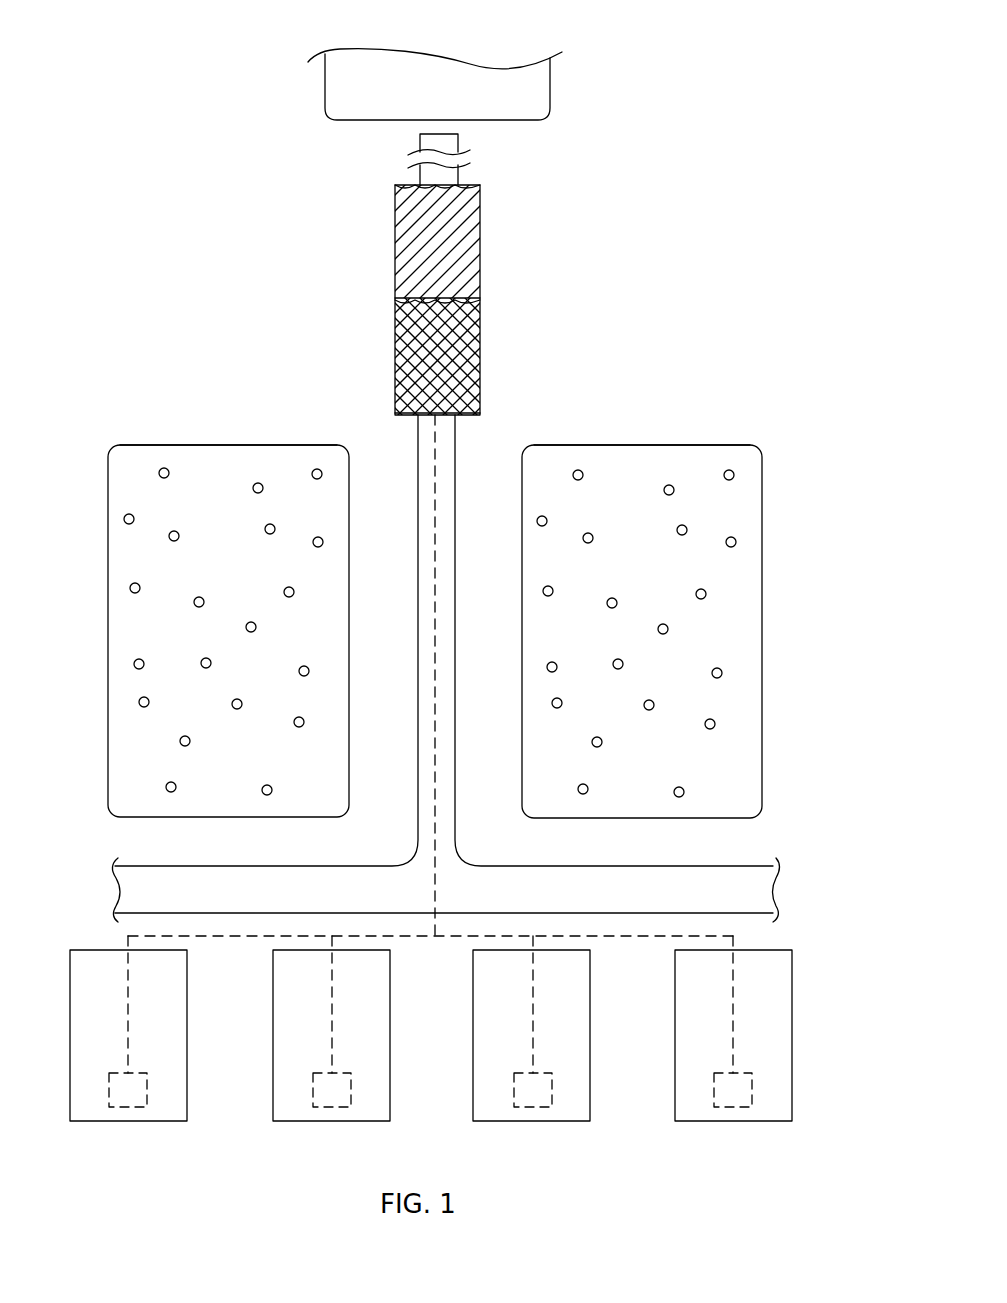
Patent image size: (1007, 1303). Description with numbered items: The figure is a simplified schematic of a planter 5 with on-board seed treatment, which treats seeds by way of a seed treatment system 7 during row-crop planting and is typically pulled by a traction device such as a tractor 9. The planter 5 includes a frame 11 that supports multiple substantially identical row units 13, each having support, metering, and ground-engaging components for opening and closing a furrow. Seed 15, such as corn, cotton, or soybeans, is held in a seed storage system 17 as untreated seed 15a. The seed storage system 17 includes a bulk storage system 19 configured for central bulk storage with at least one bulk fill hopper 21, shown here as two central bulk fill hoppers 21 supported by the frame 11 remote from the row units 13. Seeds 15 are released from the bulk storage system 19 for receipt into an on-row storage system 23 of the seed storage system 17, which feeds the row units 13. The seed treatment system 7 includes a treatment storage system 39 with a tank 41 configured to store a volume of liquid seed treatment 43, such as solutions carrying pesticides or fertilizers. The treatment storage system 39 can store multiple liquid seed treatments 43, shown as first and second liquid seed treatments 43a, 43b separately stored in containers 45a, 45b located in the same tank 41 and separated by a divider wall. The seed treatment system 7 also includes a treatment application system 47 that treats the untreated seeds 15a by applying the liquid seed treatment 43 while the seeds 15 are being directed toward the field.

The planter 5 is at (683, 190).
The seed treatment system 7 is at (550, 218).
The tractor 9 is at (622, 88).
The frame 11 is at (457, 512).
The row units 13 is at (312, 1140).
The seed 15 is at (439, 603).
The untreated seed 15a is at (126, 516).
The seed storage system 17 is at (439, 563).
The bulk storage system 19 is at (127, 410).
The bulk fill hopper 21 is at (310, 440).
The on-row storage system 23 is at (481, 983).
The treatment storage system 39 is at (430, 276).
The tank 41 is at (395, 298).
The liquid seed treatment 43 is at (457, 270).
The first liquid seed treatment 43a is at (477, 185).
The second liquid seed treatment 43b is at (477, 386).
The first container 45a is at (395, 250).
The second container 45b is at (395, 363).
The treatment application system 47 is at (152, 1090).